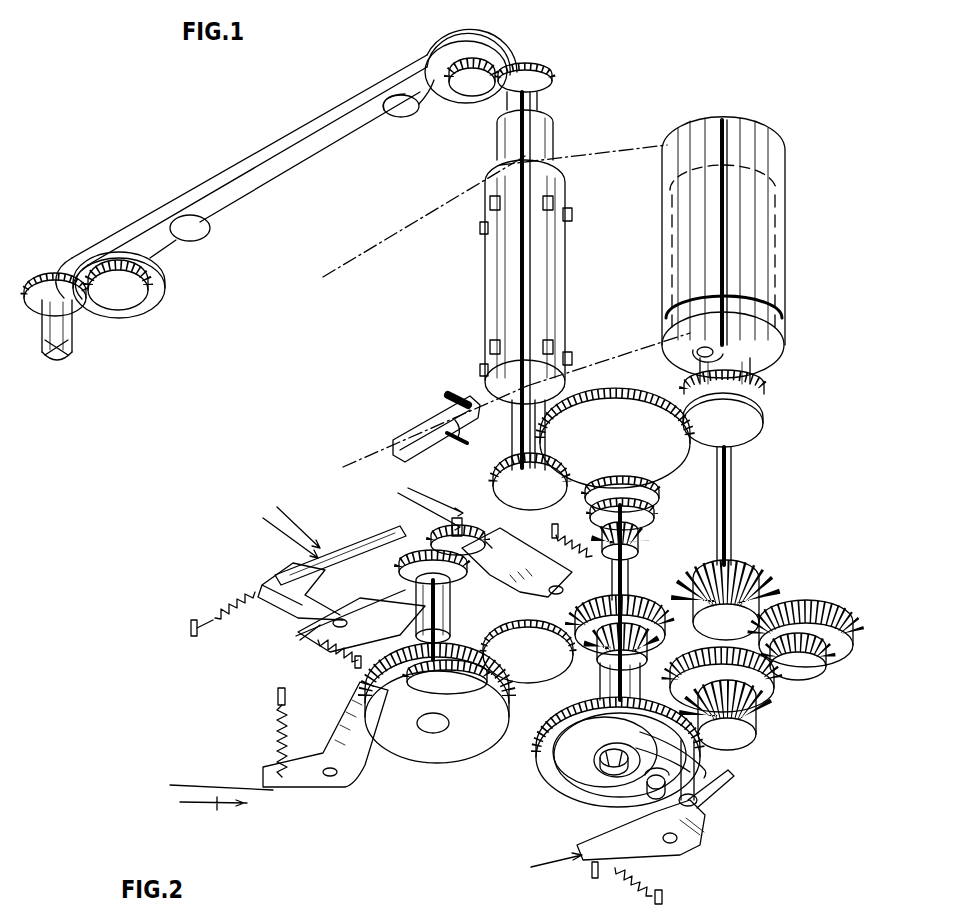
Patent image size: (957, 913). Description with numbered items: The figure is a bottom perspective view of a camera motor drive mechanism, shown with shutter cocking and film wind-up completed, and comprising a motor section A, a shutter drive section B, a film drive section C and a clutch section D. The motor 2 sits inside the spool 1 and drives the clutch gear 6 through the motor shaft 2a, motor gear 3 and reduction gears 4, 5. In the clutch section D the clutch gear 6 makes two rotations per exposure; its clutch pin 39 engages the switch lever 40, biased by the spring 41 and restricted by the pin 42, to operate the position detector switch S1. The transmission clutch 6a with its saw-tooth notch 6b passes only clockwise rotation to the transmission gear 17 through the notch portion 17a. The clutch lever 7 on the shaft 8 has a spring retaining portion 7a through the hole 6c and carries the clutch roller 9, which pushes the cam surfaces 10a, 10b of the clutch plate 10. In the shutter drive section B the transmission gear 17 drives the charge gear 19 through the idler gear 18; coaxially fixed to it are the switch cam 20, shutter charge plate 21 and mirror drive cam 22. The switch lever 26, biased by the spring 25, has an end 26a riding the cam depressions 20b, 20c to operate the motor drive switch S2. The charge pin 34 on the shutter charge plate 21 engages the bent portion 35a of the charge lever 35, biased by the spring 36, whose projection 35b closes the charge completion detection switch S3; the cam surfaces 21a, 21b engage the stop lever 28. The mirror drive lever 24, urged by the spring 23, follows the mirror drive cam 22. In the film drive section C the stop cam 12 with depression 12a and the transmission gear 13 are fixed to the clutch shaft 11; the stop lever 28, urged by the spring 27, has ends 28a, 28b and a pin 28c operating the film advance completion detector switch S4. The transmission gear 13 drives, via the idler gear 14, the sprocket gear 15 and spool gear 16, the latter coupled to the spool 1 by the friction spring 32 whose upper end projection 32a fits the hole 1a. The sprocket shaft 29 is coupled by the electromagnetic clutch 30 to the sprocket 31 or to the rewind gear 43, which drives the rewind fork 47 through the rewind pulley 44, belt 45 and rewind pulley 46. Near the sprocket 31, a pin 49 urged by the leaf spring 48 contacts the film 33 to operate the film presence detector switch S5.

The spool 1 is at (778, 180).
The hole in spool 1a is at (708, 353).
The motor 2 is at (765, 235).
The motor shaft 2a is at (733, 520).
The motor gear 3 is at (762, 575).
The reduction gear 4 is at (797, 678).
The reduction gear 5 is at (742, 716).
The clutch gear 6 is at (572, 778).
The transmission clutch 6a is at (596, 685).
The notch 6b is at (604, 662).
The hole in clutch gear 6c is at (705, 768).
The clutch lever 7 is at (562, 760).
The spring retaining portion 7a is at (670, 678).
The shaft 8 is at (608, 764).
The clutch roller 9 is at (646, 800).
The clutch plate 10 is at (625, 780).
The cam surface 10a is at (710, 788).
The cam surface 10b is at (702, 808).
The clutch shaft 11 is at (646, 598).
The stop cam 12 is at (656, 517).
The depression 12a is at (636, 548).
The transmission gear 13 is at (658, 492).
The idler gear 14 is at (608, 392).
The sprocket gear 15 is at (500, 484).
The spool gear 16 is at (750, 430).
The transmission gear 17 is at (657, 622).
The notch portion 17a is at (655, 650).
The idler gear 18 is at (523, 670).
The charge gear 19 is at (412, 662).
The switch cam 20 is at (462, 742).
The cam depression 20b is at (380, 735).
The cam depression 20c is at (447, 672).
The shutter charge plate 21 is at (462, 588).
The cam surface 21a is at (375, 548).
The cam surface 21b is at (395, 605).
The mirror drive cam 22 is at (450, 620).
The spring 23 is at (340, 658).
The mirror drive lever 24 is at (320, 638).
The spring 25 is at (275, 728).
The switch lever 26 is at (305, 780).
The end of switch lever 26a is at (365, 695).
The spring 27 is at (570, 545).
The stop lever 28 is at (546, 626).
The end of stop lever 28a is at (497, 590).
The end of stop lever 28b is at (630, 588).
The pin 28c is at (492, 547).
The sprocket shaft 29 is at (520, 412).
The electromagnetic clutch 30 is at (542, 138).
The sprocket 31 is at (562, 292).
The friction spring 32 is at (757, 388).
The upper end projection 32a is at (705, 358).
The film 33 is at (400, 240).
The charge pin 34 is at (455, 530).
The charge lever 35 is at (292, 633).
The bent portion 35a is at (395, 528).
The projection 35b is at (282, 570).
The spring 36 is at (232, 604).
The clutch pin 39 is at (690, 815).
The switch lever 40 is at (674, 852).
The spring 41 is at (632, 888).
The pin 42 is at (594, 878).
The rewind gear 43 is at (553, 78).
The rewind pulley 44 is at (493, 60).
The belt 45 is at (290, 150).
The rewind pulley 46 is at (152, 290).
The rewind fork 47 is at (70, 318).
The leaf spring 48 is at (410, 432).
The pin 49 is at (442, 392).
The motor section A is at (760, 493).
The shutter drive section B is at (240, 675).
The film drive section C is at (631, 128).
The clutch section D is at (511, 820).
The position detector switch S1 is at (543, 868).
The motor drive switch S2 is at (215, 805).
The charge completion detection switch S3 is at (268, 512).
The film advance completion detector switch S4 is at (417, 496).
The film presence detector switch S5 is at (449, 442).